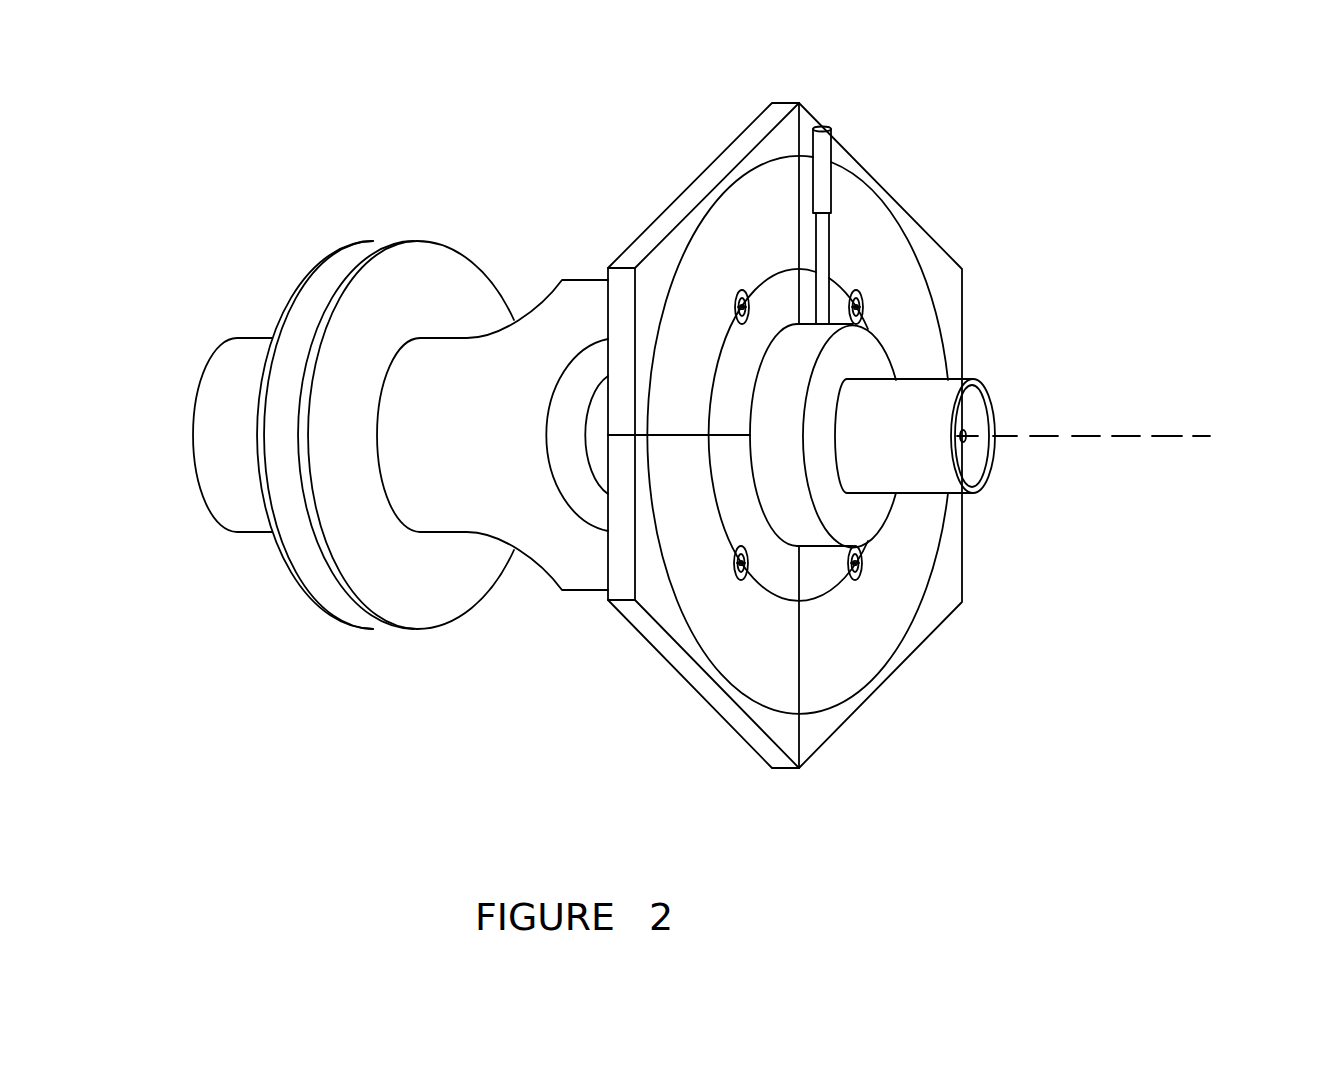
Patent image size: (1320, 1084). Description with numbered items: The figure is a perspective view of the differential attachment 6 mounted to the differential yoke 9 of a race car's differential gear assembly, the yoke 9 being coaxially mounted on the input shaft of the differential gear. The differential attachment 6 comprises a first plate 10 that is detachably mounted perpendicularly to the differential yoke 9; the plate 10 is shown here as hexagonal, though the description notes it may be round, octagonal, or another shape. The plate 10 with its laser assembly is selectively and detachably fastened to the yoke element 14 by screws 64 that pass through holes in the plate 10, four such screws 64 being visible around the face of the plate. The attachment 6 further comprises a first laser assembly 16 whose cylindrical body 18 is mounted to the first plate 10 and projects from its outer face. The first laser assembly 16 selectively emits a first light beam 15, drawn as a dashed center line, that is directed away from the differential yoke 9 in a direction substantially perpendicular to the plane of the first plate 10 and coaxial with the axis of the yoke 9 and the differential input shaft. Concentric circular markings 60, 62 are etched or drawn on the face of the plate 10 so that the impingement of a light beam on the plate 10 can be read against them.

The differential attachment 6 is at (867, 157).
The differential yoke 9 is at (450, 442).
The first plate 10 is at (937, 627).
The yoke element 14 is at (562, 558).
The first light beam 15 is at (1145, 437).
The first laser assembly 16 is at (925, 400).
The cylindrical body 18 is at (863, 357).
The concentric circular marking 60 is at (680, 613).
The concentric circular marking 62 is at (762, 588).
The screws 64 is at (735, 293).